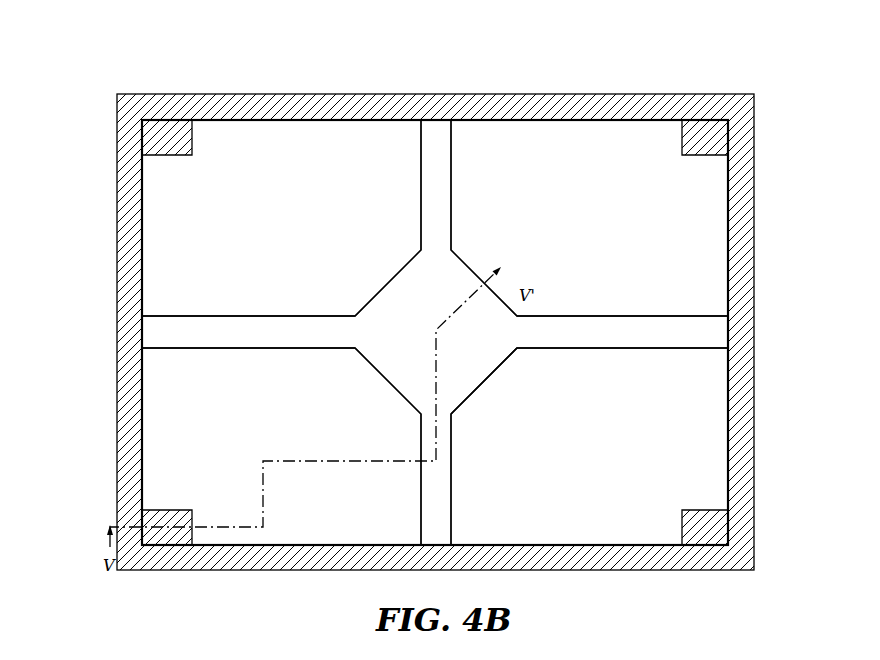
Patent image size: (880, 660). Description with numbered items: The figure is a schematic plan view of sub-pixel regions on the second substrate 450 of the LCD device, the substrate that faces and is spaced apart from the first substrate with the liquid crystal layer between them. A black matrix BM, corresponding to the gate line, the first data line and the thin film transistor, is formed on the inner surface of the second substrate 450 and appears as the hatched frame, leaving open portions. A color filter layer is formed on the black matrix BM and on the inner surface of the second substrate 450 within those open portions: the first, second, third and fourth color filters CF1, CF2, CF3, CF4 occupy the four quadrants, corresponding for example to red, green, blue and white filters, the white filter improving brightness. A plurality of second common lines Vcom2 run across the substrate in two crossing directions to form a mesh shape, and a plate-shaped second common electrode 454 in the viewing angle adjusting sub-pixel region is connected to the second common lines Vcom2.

The second substrate 450 is at (440, 300).
The black matrix BM is at (705, 128).
The second common lines Vcom2 is at (435, 137).
The first color filter CF1 is at (177, 233).
The second color filter CF2 is at (712, 207).
The third color filter CF3 is at (710, 443).
The fourth color filter CF4 is at (177, 430).
The second common electrode 454 is at (462, 384).